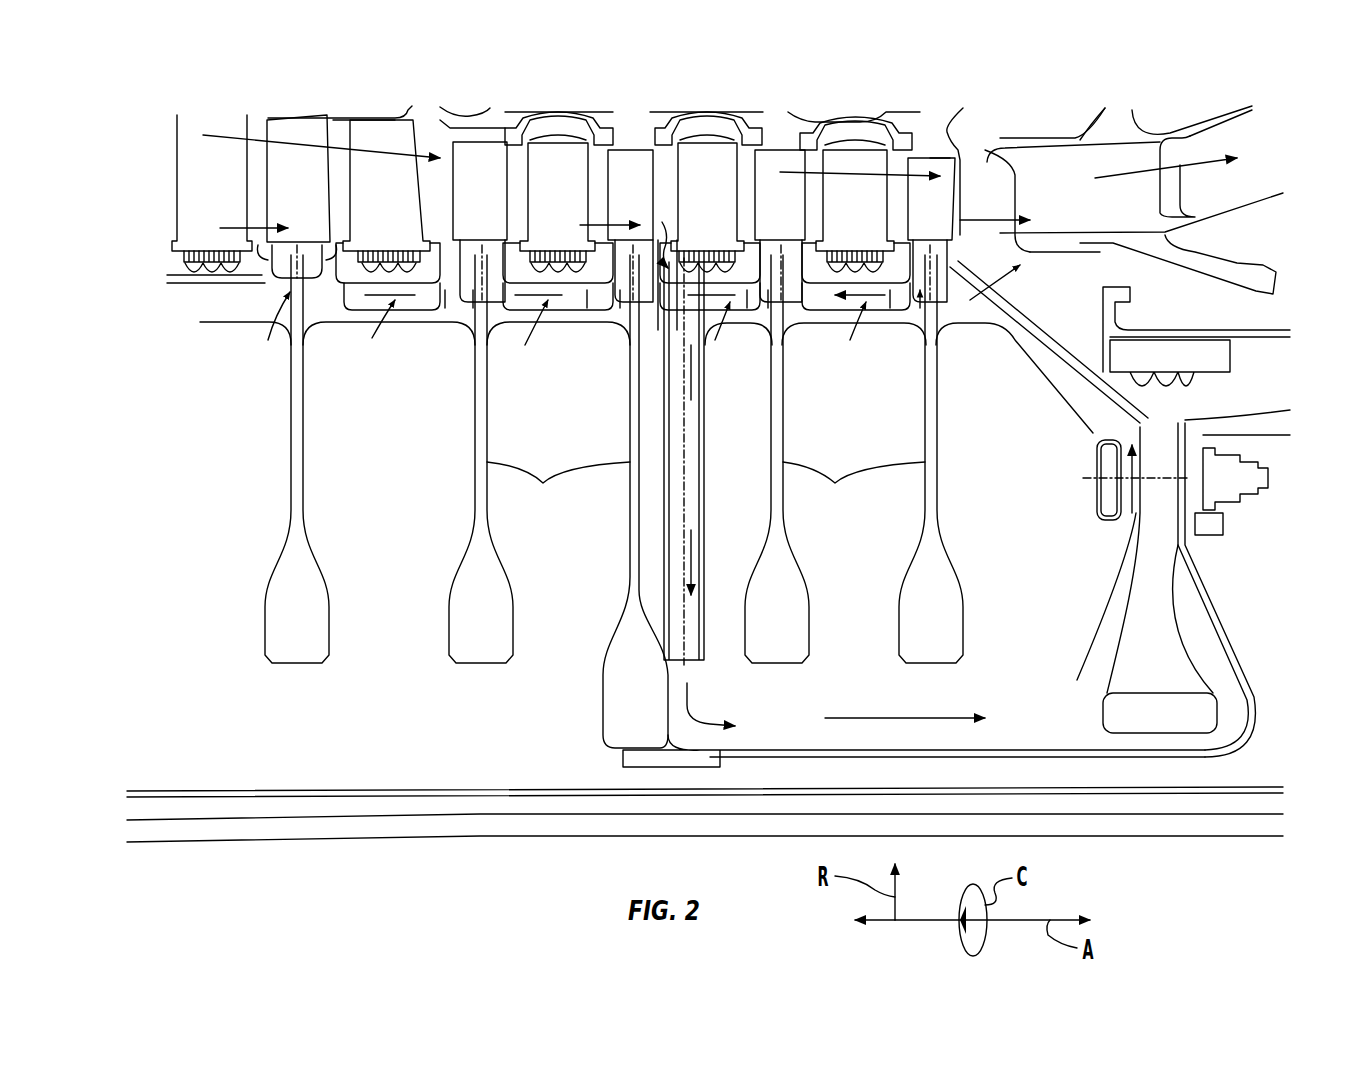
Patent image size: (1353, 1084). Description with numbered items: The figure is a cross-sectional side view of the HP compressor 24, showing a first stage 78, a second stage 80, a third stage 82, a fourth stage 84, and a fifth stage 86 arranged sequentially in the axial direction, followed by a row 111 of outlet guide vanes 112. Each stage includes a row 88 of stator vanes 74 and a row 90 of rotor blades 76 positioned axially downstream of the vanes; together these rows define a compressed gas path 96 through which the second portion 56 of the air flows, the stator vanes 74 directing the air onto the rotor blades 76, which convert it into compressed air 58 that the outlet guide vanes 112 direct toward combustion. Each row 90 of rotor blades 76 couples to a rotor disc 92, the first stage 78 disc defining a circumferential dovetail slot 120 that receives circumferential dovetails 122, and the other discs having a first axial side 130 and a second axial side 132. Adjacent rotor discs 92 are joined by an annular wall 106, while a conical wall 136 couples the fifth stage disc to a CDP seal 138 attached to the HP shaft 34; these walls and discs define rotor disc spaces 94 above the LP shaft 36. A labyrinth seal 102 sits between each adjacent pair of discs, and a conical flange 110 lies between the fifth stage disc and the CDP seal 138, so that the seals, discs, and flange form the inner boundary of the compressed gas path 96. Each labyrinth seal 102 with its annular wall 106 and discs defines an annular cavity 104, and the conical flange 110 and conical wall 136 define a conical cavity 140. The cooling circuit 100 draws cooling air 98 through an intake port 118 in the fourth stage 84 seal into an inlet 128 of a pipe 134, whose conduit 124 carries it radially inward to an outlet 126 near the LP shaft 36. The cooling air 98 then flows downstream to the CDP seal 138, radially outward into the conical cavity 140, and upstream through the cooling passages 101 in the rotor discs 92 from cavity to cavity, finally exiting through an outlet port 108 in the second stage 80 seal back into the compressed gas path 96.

The HP compressor 24 is at (152, 93).
The HP shaft 34 is at (1252, 418).
The LP shaft 36 is at (360, 790).
The second portion of the air 56 is at (252, 215).
The compressed air 58 is at (975, 217).
The stator vanes 74 is at (216, 180).
The rotor blades 76 is at (303, 210).
The first stage 78 is at (252, 100).
The second stage 80 is at (432, 107).
The third stage 82 is at (596, 112).
The fourth stage 84 is at (719, 100).
The fifth stage 86 is at (906, 100).
The row of stator vanes 88 is at (177, 182).
The row of rotor blades 90 is at (265, 240).
The rotor disc 92 is at (290, 513).
The rotor disc space 94 is at (189, 450).
The compressed gas path 96 is at (768, 150).
The cooling air 98 is at (1100, 640).
The cooling circuit 100 is at (878, 730).
The cooling passages 101 is at (470, 320).
The labyrinth seal 102 is at (195, 300).
The annular cavity 104 is at (450, 330).
The annular wall 106 is at (360, 330).
The outlet port 108 is at (362, 300).
The conical flange 110 is at (985, 345).
The row of outlet guide vanes 111 is at (990, 175).
The outlet guide vanes 112 is at (1091, 218).
The intake port 118 is at (662, 222).
The circumferential dovetail slot 120 is at (290, 277).
The circumferential dovetail 122 is at (282, 273).
The conduit 124 is at (692, 510).
The outlet 126 is at (680, 668).
The inlet 128 is at (680, 338).
The first axial side 130 is at (446, 272).
The second axial side 132 is at (535, 320).
The pipe 134 is at (664, 518).
The conical wall 136 is at (1060, 410).
The CDP seal 138 is at (1180, 620).
The conical cavity 140 is at (958, 298).